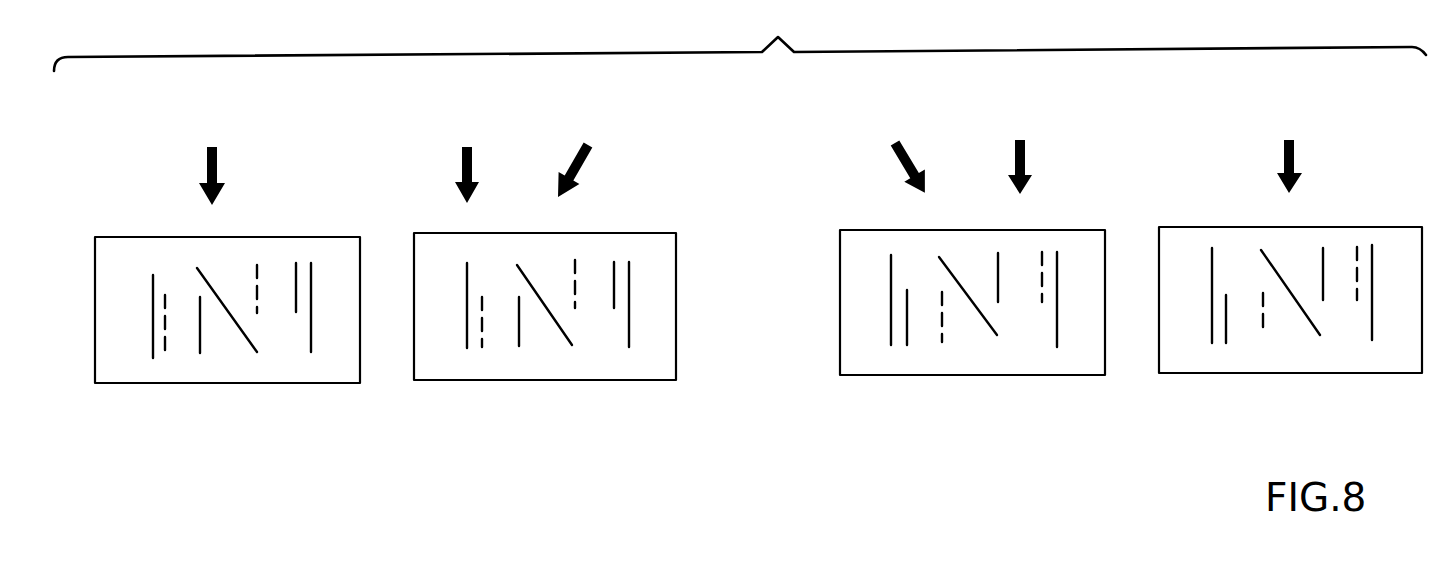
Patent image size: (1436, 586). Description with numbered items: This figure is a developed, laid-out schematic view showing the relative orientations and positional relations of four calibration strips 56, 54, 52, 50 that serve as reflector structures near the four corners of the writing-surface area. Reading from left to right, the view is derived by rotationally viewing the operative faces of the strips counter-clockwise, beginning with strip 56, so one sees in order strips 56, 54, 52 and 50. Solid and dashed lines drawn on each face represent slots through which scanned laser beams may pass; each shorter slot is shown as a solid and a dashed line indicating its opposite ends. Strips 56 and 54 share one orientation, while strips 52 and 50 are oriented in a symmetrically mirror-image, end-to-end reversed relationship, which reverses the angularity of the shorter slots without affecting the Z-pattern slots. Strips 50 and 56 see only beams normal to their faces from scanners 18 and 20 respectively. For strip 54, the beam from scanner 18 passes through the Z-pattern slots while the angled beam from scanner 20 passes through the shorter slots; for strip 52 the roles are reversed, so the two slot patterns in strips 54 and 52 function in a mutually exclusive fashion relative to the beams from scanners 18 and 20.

The scanner 18 is at (882, 170).
The scanner 20 is at (641, 172).
The calibration strip 50 is at (1335, 373).
The calibration strip 52 is at (1028, 375).
The calibration strip 54 is at (593, 380).
The calibration strip 56 is at (273, 383).